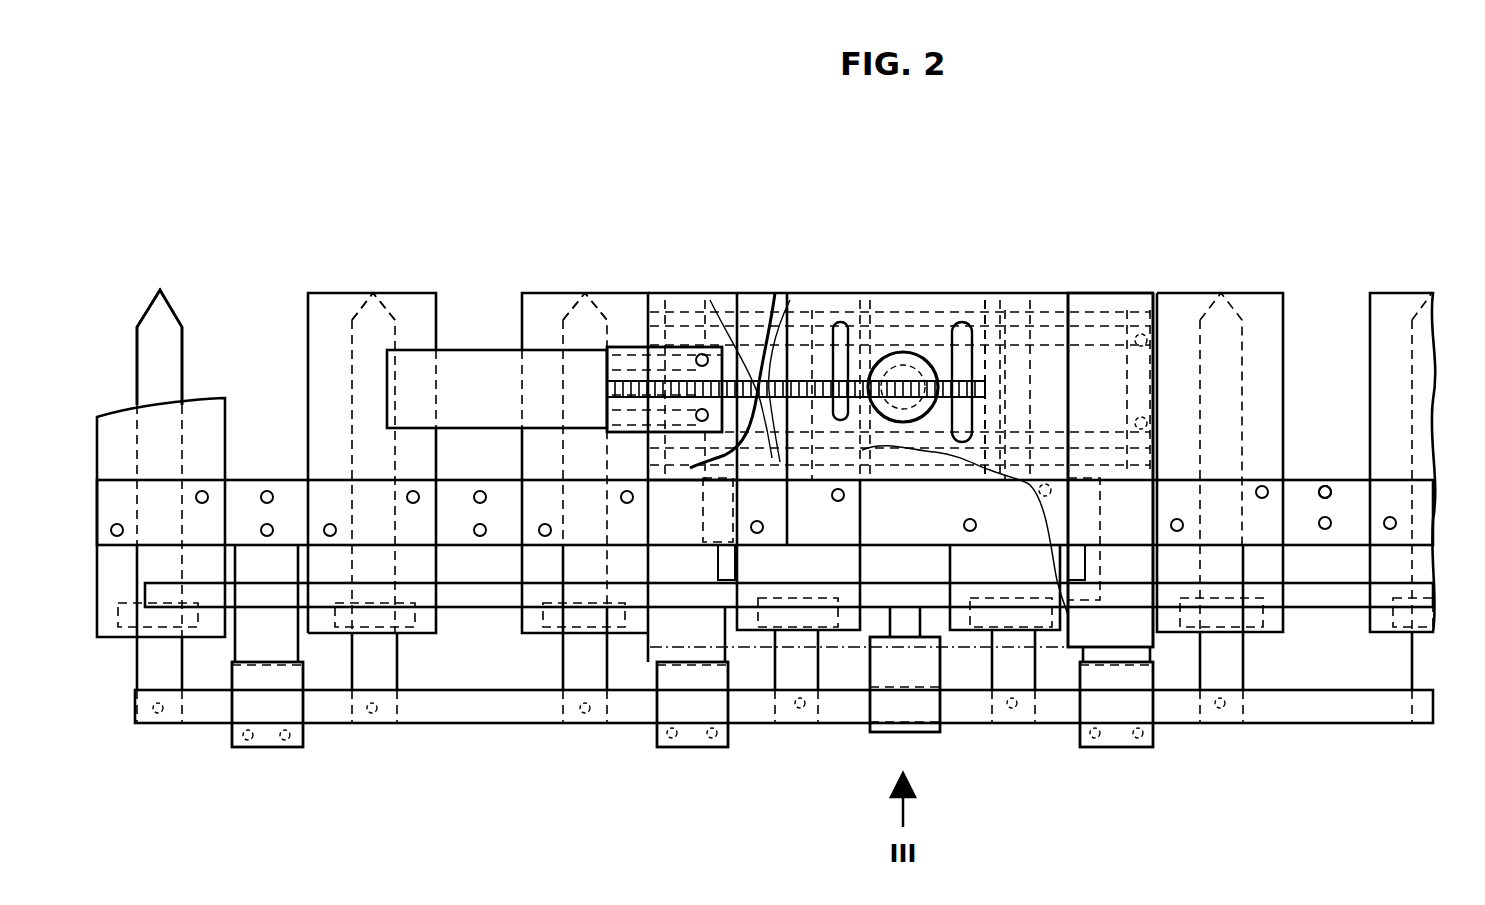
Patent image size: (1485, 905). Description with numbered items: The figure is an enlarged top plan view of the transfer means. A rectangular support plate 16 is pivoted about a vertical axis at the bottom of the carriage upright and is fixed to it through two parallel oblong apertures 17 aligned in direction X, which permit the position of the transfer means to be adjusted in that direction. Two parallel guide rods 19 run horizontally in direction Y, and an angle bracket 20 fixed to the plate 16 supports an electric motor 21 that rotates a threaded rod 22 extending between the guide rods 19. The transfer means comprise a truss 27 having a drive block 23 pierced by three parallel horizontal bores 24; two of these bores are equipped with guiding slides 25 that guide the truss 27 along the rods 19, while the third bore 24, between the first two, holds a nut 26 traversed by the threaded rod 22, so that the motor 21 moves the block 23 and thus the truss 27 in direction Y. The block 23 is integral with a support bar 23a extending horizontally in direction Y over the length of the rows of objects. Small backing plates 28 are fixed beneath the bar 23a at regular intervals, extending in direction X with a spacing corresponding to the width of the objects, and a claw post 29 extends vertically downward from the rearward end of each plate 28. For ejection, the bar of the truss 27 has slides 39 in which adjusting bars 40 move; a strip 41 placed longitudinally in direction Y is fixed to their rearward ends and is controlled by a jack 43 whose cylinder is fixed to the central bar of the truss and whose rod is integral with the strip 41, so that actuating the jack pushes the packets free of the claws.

The rectangular support plate 16 is at (1097, 293).
The oblong apertures 17 is at (925, 300).
The guide rods 19 is at (727, 300).
The angle bracket 20 is at (633, 360).
The electric motor 21 is at (473, 348).
The threaded rod 22 is at (775, 293).
The drive block 23 is at (957, 292).
The support bar 23a is at (457, 497).
The bores 24 is at (848, 290).
The guiding slides 25 is at (1005, 290).
The nut 26 is at (870, 478).
The truss 27 is at (1320, 480).
The backing plates 28 is at (207, 405).
The claw post 29 is at (130, 630).
The slide 39 is at (1100, 520).
The adjusting bar 40 is at (1090, 565).
The strip 41 is at (1378, 580).
The jack 43 is at (880, 708).